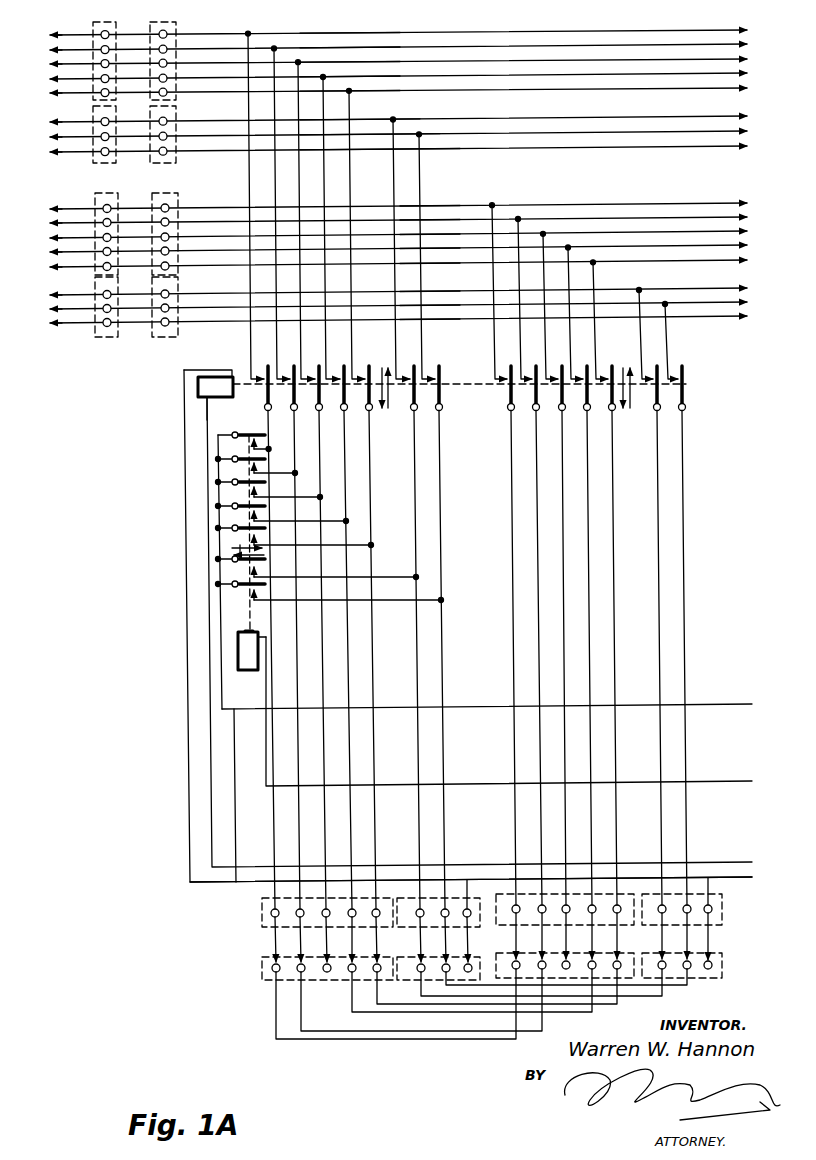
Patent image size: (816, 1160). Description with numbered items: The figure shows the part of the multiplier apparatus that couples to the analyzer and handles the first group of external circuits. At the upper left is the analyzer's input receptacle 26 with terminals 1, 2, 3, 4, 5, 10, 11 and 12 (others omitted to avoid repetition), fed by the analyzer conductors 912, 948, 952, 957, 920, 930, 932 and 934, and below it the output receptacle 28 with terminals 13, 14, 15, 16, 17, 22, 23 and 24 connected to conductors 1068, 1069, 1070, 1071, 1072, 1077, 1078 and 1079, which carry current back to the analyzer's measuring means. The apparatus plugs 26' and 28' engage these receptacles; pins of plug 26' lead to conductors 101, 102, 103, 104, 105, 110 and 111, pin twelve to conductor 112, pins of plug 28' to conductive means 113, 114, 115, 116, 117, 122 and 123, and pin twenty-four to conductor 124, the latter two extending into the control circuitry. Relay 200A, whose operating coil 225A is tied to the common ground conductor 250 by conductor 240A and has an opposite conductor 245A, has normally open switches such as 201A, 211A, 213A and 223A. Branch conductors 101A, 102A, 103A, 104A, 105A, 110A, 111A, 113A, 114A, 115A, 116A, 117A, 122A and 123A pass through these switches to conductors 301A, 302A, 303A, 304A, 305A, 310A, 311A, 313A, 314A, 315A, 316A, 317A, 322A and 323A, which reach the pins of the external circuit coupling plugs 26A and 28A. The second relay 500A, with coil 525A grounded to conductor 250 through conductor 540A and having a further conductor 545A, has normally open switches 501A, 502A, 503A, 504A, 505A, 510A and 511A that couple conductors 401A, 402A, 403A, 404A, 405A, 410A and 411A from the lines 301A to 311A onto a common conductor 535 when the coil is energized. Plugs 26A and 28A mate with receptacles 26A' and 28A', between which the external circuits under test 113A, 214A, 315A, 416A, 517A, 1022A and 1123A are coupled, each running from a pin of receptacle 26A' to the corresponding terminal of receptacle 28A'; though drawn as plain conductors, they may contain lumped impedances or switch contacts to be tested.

The terminal 1 is at (102, 32).
The terminal 2 is at (102, 47).
The terminal 3 is at (102, 61).
The terminal 4 is at (102, 76).
The terminal 5 is at (102, 90).
The terminal 10 is at (102, 119).
The terminal 11 is at (102, 134).
The terminal 12 is at (102, 149).
The terminal 13 is at (104, 206).
The terminal 14 is at (104, 220).
The terminal 15 is at (104, 235).
The terminal 16 is at (104, 249).
The terminal 17 is at (104, 264).
The terminal 22 is at (104, 292).
The terminal 23 is at (104, 306).
The terminal 24 is at (104, 320).
The input receptacle 26 is at (110, 82).
The plug 26' is at (174, 82).
The output receptacle 28 is at (110, 255).
The plug 28' is at (173, 255).
The conductor 912 is at (58, 34).
The conductor 948 is at (42, 39).
The conductor 952 is at (42, 53).
The conductor 957 is at (42, 68).
The conductor 920 is at (54, 93).
The conductor 930 is at (60, 122).
The conductor 932 is at (42, 130).
The conductor 934 is at (54, 152).
The conductor 1068 is at (60, 209).
The conductor 1069 is at (42, 214).
The conductor 1070 is at (58, 238).
The conductor 1071 is at (58, 252).
The conductor 1072 is at (58, 267).
The conductor 1077 is at (58, 295).
The conductor 1078 is at (58, 309).
The conductor 1079 is at (58, 323).
The conductor 101 is at (396, 35).
The conductor 102 is at (398, 50).
The conductor 103 is at (398, 64).
The conductor 104 is at (398, 79).
The conductor 105 is at (398, 93).
The conductor 110 is at (414, 122).
The conductor 111 is at (430, 137).
The conductor 112 is at (446, 152).
The conductive means 113 is at (455, 206).
The conductive means 114 is at (455, 221).
The conductive means 115 is at (455, 235).
The conductive means 116 is at (455, 249).
The conductive means 117 is at (455, 264).
The conductive means 122 is at (455, 292).
The conductive means 123 is at (455, 306).
The conductor 124 is at (455, 320).
The conductor 101A is at (249, 120).
The conductor 102A is at (277, 120).
The conductor 103A is at (302, 120).
The conductor 104A is at (327, 120).
The conductor 105A is at (352, 117).
The conductor 110A is at (394, 188).
The conductor 111A is at (422, 184).
The conductor / external circuit 113A is at (494, 348).
The conductor 114A is at (518, 358).
The conductor 115A is at (544, 360).
The conductor 116A is at (570, 360).
The conductor 117A is at (596, 354).
The conductor 122A is at (642, 358).
The conductor 123A is at (668, 353).
The relay 200A is at (197, 388).
The relay switch 201A is at (256, 388).
The relay switch 211A is at (436, 410).
The relay switch 213A is at (496, 389).
The relay switch 223A is at (686, 398).
The operating coil 225A is at (222, 392).
The conductor 301A is at (272, 702).
The conductor 302A is at (298, 672).
The conductor 303A is at (323, 697).
The conductor 304A is at (351, 738).
The conductor 305A is at (374, 689).
The conductor 310A is at (418, 646).
The conductor 311A is at (444, 673).
The conductor 313A is at (515, 577).
The conductor 314A is at (539, 577).
The conductor / external circuit 315A is at (565, 553).
The conductor 316A is at (587, 563).
The conductor 317A is at (616, 562).
The conductor 322A is at (658, 586).
The conductor 323A is at (687, 566).
The conductor 401A is at (262, 447).
The conductor 402A is at (264, 471).
The conductor 403A is at (264, 495).
The conductor 404A is at (296, 520).
The conductor 405A is at (296, 545).
The conductor 410A is at (324, 576).
The conductor 411A is at (324, 604).
The relay 500A is at (236, 651).
The relay switch 501A is at (243, 444).
The relay switch 502A is at (241, 468).
The relay switch 503A is at (241, 491).
The relay switch 504A is at (241, 514).
The relay switch 505A is at (241, 537).
The relay switch 510A is at (241, 568).
The relay switch 511A is at (241, 593).
The operating coil 525A is at (236, 660).
The conductor 535 is at (218, 545).
The conductor 540A is at (235, 829).
The conductor 545A is at (267, 740).
The conductor 240A is at (189, 708).
The conductor 245A is at (212, 832).
The common ground conductor 250 is at (201, 882).
The external circuit coupling plug 26A is at (349, 912).
The receptacle 26A' is at (348, 971).
The external circuit coupling plug 28A is at (600, 901).
The receptacle 28A' is at (596, 958).
The external circuit 214A is at (272, 1030).
The external circuit 416A is at (374, 1018).
The external circuit 517A is at (404, 1012).
The external circuit 1022A is at (644, 987).
The external circuit 1123A is at (686, 982).